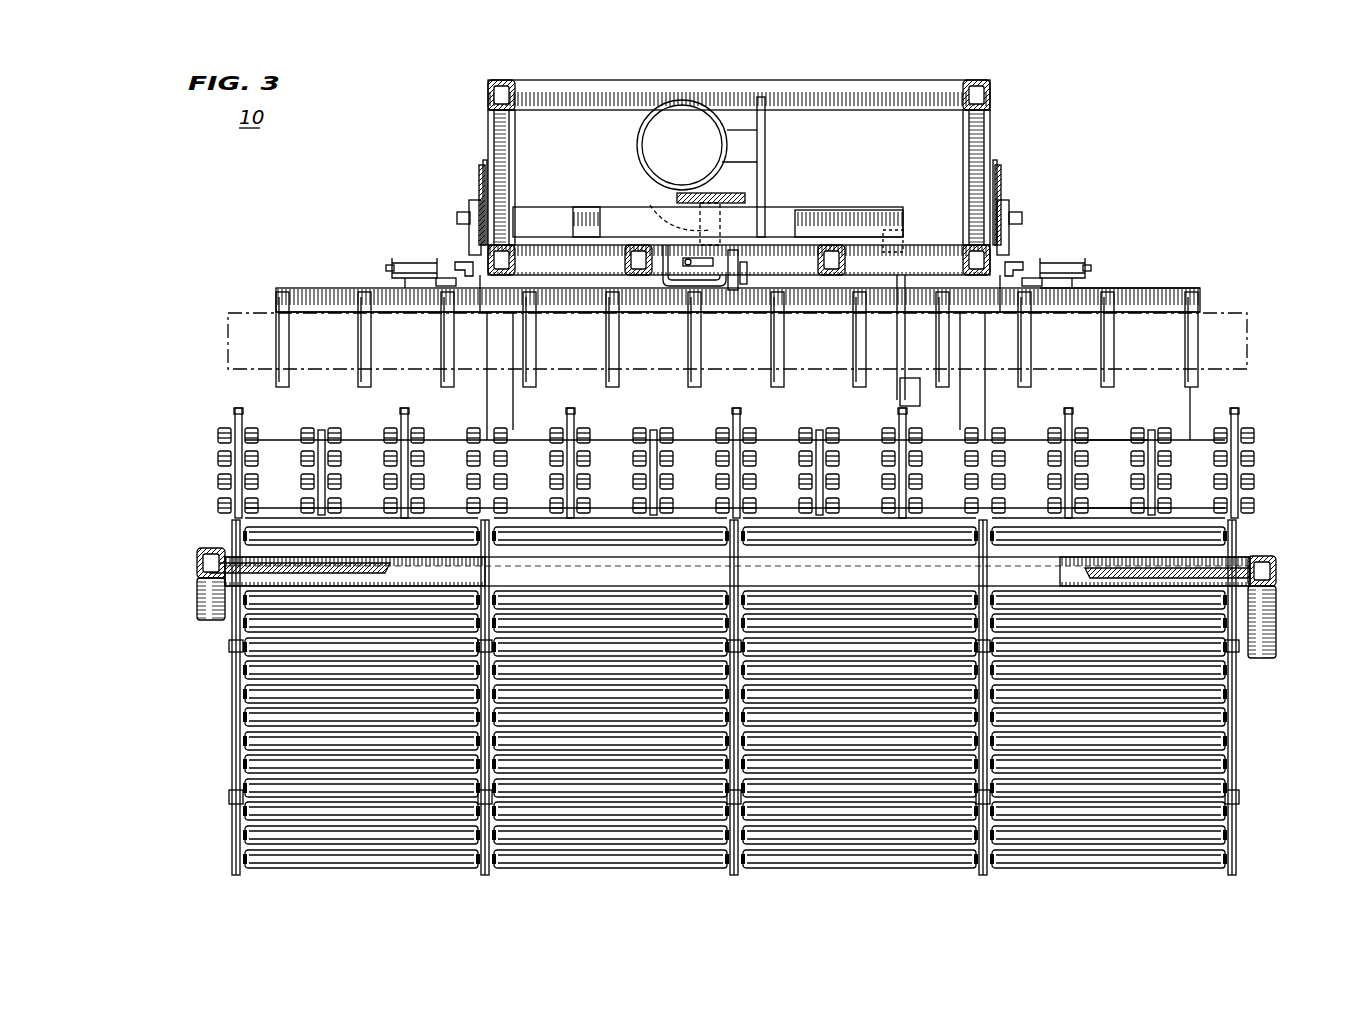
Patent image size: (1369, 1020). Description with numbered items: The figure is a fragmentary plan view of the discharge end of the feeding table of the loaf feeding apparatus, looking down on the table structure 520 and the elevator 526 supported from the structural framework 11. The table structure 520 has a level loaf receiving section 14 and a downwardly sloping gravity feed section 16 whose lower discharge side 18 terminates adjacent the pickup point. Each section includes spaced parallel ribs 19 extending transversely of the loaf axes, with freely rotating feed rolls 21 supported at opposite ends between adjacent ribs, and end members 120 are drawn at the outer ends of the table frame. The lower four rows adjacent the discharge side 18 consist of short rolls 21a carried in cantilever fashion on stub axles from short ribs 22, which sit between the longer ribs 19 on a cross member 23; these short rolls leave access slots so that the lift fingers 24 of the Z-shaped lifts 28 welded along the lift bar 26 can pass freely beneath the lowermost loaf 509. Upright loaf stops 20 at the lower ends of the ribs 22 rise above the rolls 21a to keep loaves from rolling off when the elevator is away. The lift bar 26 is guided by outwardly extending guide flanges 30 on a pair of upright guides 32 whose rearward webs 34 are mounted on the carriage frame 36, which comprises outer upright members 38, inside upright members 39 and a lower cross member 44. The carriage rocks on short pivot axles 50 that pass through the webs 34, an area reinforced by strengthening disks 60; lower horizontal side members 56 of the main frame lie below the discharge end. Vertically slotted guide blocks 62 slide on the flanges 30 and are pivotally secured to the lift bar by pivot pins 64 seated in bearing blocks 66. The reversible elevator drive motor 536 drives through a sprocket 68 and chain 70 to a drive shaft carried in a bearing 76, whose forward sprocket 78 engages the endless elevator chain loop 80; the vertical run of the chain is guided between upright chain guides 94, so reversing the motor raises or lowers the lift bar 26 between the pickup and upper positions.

The structural framework 11 is at (925, 83).
The loaf receiving section 14 is at (1240, 871).
The gravity feed section 16 is at (1250, 718).
The lower discharge side 18 is at (1195, 426).
The ribs 19 is at (480, 550).
The loaf stops 20 is at (237, 407).
The feed rolls 21 is at (250, 678).
The short rolls 21a is at (275, 478).
The short ribs 22 is at (352, 448).
The cross member 23 is at (1102, 438).
The lift fingers 24 is at (285, 348).
The lift bar 26 is at (1110, 290).
The Z-shaped lifts 28 is at (279, 295).
The guide flanges 30 is at (458, 263).
The upright guides 32 is at (479, 190).
The webs 34 is at (485, 186).
The carriage frame 36 is at (556, 232).
The outer upright members 38 is at (492, 290).
The inside upright members 39 is at (625, 277).
The lower cross member 44 is at (598, 232).
The pivot axles 50 is at (458, 222).
The lower horizontal side members 56 is at (486, 398).
The strengthening disks 60 is at (469, 206).
The guide blocks 62 is at (446, 288).
The pivot pins 64 is at (406, 285).
The bearing blocks 66 is at (405, 260).
The sprocket 68 is at (740, 160).
The chain 70 is at (743, 196).
The bearing 76 is at (654, 210).
The sprocket 78 is at (685, 258).
The endless elevator chain loop 80 is at (665, 266).
The chain guides 94 is at (738, 288).
The end block 120 is at (205, 603).
The loaves 509 is at (1248, 340).
The table structure 520 is at (190, 855).
The elevator 526 is at (1213, 297).
The elevator drive motor 536 is at (665, 118).